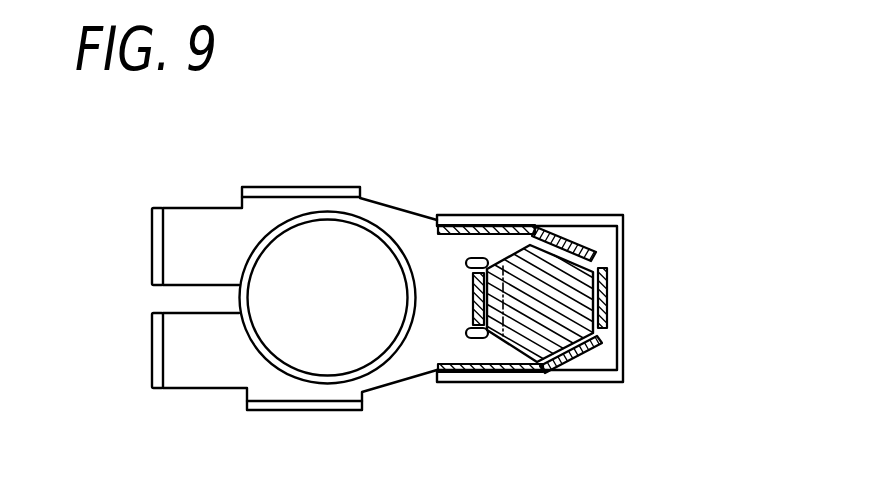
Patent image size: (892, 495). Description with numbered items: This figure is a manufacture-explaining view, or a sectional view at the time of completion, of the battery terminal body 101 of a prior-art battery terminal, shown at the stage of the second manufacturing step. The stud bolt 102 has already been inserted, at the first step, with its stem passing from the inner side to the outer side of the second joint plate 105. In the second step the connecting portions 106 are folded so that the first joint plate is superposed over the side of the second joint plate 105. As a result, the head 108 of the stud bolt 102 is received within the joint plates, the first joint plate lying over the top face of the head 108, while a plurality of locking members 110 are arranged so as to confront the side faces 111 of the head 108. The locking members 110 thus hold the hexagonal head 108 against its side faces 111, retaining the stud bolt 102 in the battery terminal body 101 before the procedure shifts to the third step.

The battery terminal body 101 is at (388, 178).
The stud bolt 102 is at (516, 243).
The second joint plate 105 is at (648, 275).
The connecting portions 106 is at (152, 247).
The head 108 is at (523, 342).
The locking members 110 is at (572, 237).
The side faces 111 is at (588, 244).